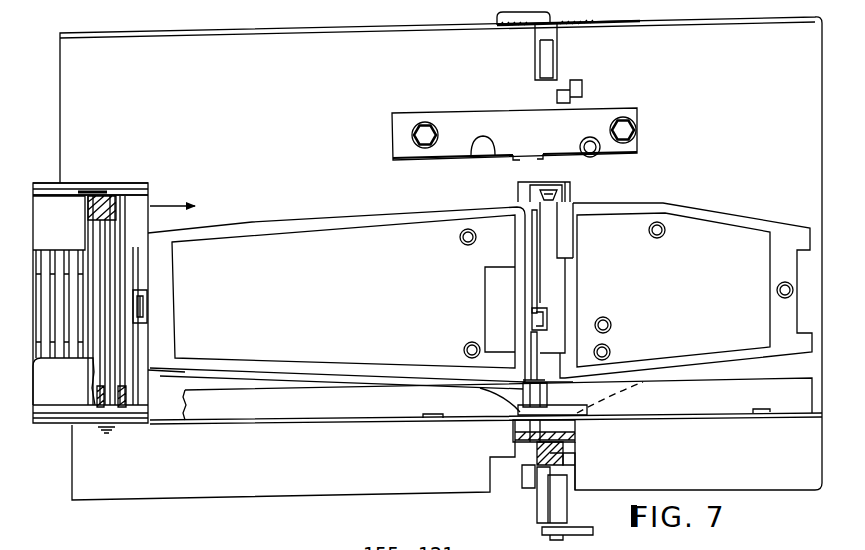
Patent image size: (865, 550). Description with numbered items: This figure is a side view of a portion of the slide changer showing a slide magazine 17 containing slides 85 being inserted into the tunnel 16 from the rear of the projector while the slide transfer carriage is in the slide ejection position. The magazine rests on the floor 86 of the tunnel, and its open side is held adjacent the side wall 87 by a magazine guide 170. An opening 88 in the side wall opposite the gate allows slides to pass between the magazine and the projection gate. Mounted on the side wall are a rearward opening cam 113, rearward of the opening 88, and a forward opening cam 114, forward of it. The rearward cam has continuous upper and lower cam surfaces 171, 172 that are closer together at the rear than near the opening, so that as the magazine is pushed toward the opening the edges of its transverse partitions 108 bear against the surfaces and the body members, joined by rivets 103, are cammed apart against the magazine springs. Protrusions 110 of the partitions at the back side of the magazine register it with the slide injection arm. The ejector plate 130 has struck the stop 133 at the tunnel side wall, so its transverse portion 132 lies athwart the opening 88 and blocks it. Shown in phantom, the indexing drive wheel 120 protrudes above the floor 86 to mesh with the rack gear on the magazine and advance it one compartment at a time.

The tunnel 16 is at (412, 155).
The slide magazine 17 is at (96, 183).
The slides 85 is at (112, 235).
The floor 86 is at (170, 422).
The side wall 87 is at (373, 43).
The opening 88 is at (527, 195).
The rivets 103 is at (140, 318).
The transverse partitions 108 is at (144, 182).
The protrusions 110 is at (33, 372).
The rearward opening cam 113 is at (305, 314).
The forward opening cam 114 is at (716, 299).
The indexing drive wheel 120 is at (630, 385).
The ejector plate 130 is at (540, 243).
The transverse portion 132 is at (550, 303).
The stop 133 is at (532, 322).
The magazine guide 170 is at (343, 412).
The upper cam surface 171 is at (252, 222).
The lower cam surface 172 is at (245, 377).